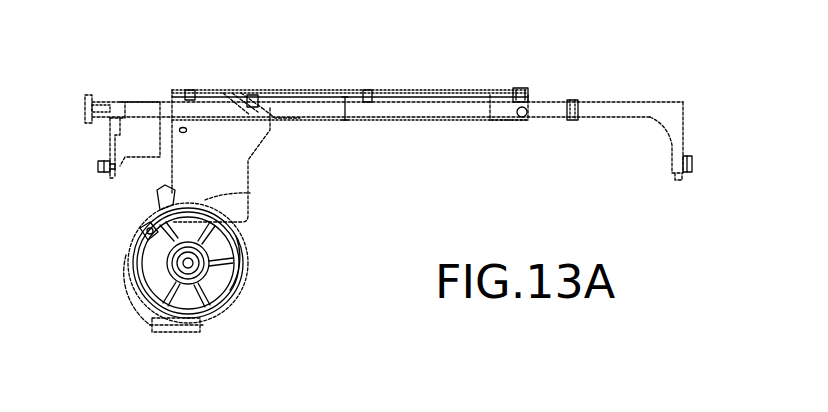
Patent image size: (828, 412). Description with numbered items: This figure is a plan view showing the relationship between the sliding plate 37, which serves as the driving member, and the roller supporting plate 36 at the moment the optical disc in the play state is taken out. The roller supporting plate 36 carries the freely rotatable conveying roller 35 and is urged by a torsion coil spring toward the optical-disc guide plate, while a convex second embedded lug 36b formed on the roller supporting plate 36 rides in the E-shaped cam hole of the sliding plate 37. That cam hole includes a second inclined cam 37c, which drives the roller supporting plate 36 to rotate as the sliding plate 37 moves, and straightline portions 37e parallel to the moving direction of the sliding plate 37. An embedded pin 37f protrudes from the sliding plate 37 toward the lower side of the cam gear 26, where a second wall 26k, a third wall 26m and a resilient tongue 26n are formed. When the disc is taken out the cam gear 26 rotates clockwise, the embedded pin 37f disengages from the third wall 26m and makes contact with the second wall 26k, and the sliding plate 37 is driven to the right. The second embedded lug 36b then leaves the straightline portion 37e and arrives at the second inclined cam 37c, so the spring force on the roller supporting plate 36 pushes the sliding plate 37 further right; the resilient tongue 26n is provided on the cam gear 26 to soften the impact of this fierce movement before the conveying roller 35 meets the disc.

The cam gear 26 is at (132, 282).
The second wall 26k is at (138, 232).
The third wall 26m is at (250, 193).
The resilient tongue 26n is at (248, 250).
The conveying roller 35 is at (168, 98).
The roller supporting plate 36 is at (557, 103).
The second embedded lug 36b is at (253, 98).
The sliding plate 37 is at (340, 90).
The second inclined cam 37c is at (262, 110).
The straightline portion 37e is at (293, 118).
The embedded pin 37f is at (172, 197).